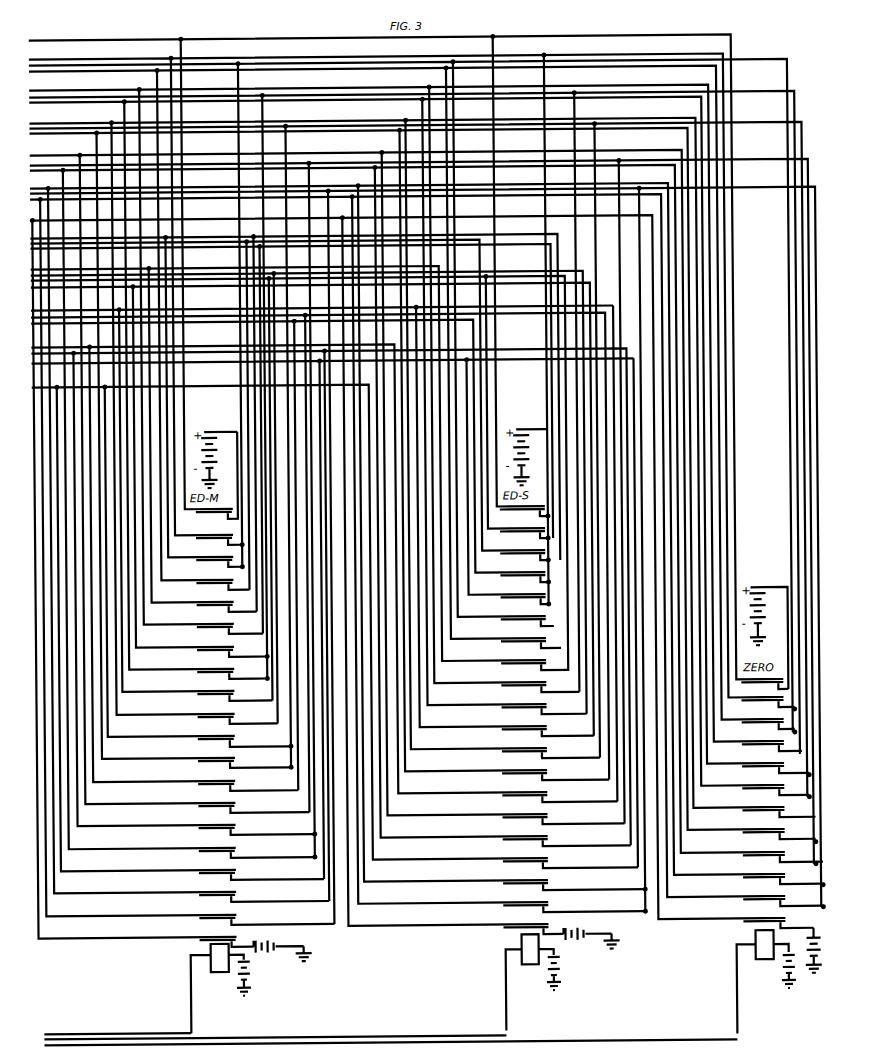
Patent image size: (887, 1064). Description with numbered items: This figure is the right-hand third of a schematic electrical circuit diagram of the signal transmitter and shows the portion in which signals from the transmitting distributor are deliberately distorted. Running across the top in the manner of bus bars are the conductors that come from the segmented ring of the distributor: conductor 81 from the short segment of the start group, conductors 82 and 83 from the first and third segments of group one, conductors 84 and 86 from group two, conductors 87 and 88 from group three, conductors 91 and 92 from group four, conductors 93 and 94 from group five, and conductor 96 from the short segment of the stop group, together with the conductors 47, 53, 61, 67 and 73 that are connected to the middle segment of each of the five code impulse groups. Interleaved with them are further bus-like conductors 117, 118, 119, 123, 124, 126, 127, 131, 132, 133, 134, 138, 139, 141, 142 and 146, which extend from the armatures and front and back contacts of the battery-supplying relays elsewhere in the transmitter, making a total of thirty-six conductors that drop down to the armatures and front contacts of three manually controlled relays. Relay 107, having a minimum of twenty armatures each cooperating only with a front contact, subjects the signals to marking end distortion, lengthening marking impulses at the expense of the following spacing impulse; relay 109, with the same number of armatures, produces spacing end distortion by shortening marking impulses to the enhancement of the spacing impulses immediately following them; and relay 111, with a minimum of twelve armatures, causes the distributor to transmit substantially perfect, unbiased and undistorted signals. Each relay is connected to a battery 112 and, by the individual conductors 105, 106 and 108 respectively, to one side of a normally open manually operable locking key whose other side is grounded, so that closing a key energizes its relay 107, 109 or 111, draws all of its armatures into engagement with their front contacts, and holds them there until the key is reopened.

The conductor 81 is at (54, 37).
The conductor 82 is at (548, 412).
The conductor 47 is at (791, 536).
The conductor 83 is at (412, 387).
The conductor 84 is at (415, 414).
The conductor 53 is at (798, 516).
The conductor 86 is at (419, 425).
The conductor 87 is at (419, 452).
The conductor 61 is at (805, 781).
The conductor 88 is at (422, 463).
The conductor 91 is at (423, 490).
The conductor 67 is at (77, 160).
The conductor 92 is at (213, 165).
The conductor 93 is at (56, 185).
The conductor 73 is at (208, 190).
The conductor 94 is at (234, 196).
The conductor 96 is at (214, 217).
The conductor 118 is at (219, 237).
The conductor 119 is at (483, 240).
The conductor 117 is at (536, 244).
The conductor 123 is at (220, 267).
The conductor 127 is at (480, 265).
The conductor 124 is at (276, 714).
The conductor 126 is at (592, 739).
The conductor 131 is at (219, 307).
The conductor 133 is at (615, 794).
The conductor 132 is at (307, 799).
The conductor 134 is at (296, 777).
The conductor 138 is at (219, 345).
The conductor 139 is at (326, 888).
The conductor 141 is at (635, 860).
The conductor 142 is at (321, 866).
The conductor 146 is at (335, 631).
The conductor 105 is at (88, 1031).
The conductor 106 is at (268, 1036).
The relay 107 is at (214, 971).
The conductor 108 is at (582, 1042).
The relay 109 is at (530, 967).
The relay 111 is at (767, 963).
The battery 112 is at (249, 977).